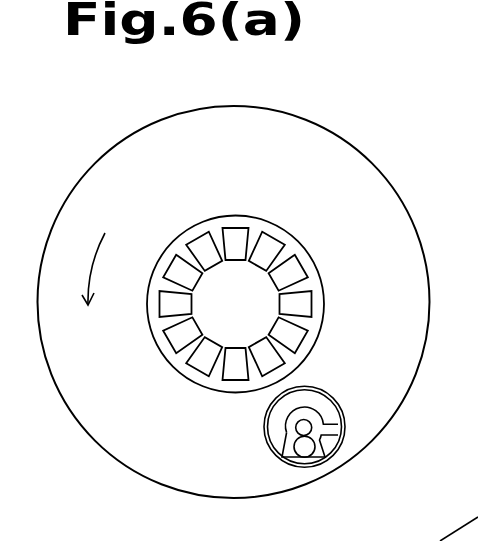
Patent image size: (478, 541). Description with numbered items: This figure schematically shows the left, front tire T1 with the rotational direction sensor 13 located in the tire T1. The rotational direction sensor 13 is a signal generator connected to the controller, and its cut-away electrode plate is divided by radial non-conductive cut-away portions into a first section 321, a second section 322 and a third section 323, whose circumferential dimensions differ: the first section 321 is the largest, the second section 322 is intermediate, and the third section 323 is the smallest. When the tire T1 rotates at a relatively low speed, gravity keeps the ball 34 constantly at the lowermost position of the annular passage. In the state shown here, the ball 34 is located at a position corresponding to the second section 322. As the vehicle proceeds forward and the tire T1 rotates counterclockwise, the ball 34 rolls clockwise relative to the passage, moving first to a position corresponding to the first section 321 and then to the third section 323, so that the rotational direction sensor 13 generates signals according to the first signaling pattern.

The left front tire T1 is at (349, 146).
The rotational direction sensor 13 is at (312, 436).
The first section 321 is at (276, 419).
The second section 322 is at (312, 460).
The third section 323 is at (331, 438).
The ball 34 is at (300, 453).